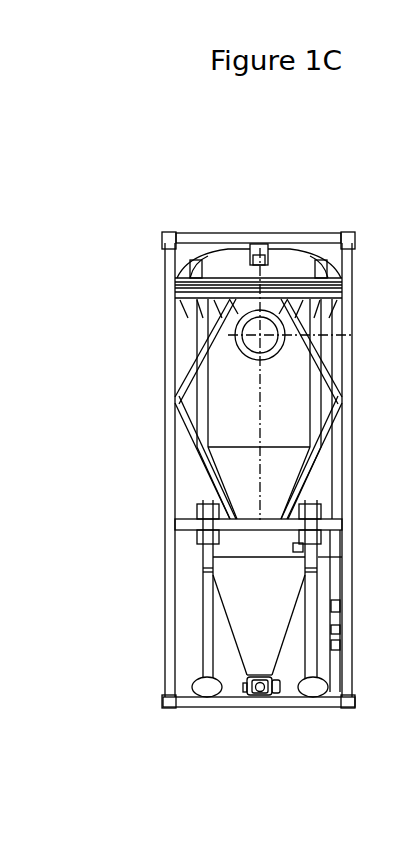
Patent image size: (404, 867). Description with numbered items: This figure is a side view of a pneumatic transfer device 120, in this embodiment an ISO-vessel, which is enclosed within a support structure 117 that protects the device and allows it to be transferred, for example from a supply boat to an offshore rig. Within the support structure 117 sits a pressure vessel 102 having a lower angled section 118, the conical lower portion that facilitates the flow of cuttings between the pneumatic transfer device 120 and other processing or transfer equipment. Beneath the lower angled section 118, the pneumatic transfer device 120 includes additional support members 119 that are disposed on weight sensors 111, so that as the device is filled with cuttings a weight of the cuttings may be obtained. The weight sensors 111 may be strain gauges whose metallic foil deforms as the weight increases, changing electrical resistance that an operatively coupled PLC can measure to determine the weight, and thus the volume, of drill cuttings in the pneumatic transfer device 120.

The pneumatic transfer device 120 is at (98, 466).
The support structure 117 is at (280, 233).
The pressure vessel 102 is at (278, 406).
The lower angled section 118 is at (279, 608).
The additional support members 119 is at (208, 595).
The weight sensors 111 is at (308, 687).